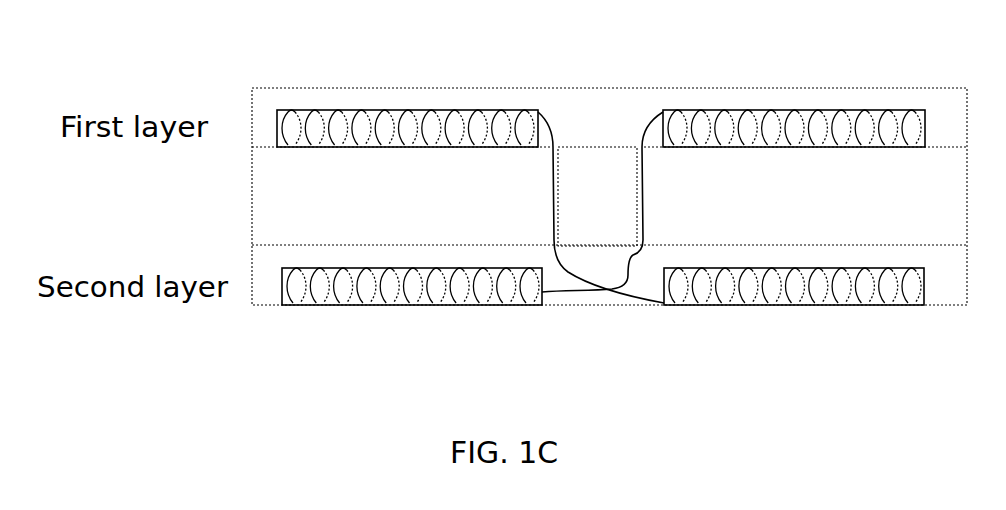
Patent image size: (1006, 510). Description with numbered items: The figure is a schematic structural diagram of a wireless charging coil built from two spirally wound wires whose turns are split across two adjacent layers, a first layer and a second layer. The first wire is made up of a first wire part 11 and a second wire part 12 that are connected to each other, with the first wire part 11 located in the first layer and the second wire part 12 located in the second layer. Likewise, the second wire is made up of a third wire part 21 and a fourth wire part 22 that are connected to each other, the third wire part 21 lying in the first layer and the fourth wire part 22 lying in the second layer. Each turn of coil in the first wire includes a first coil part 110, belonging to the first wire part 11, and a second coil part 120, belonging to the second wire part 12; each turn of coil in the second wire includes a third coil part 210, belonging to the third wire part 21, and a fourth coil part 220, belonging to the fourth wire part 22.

The first coil part 110 is at (512, 108).
The second coil part 120 is at (904, 267).
The third coil part 210 is at (902, 108).
The fourth coil part 220 is at (512, 267).
The first wire part 11 is at (539, 108).
The second wire part 12 is at (911, 307).
The third wire part 21 is at (914, 108).
The fourth wire part 22 is at (531, 308).